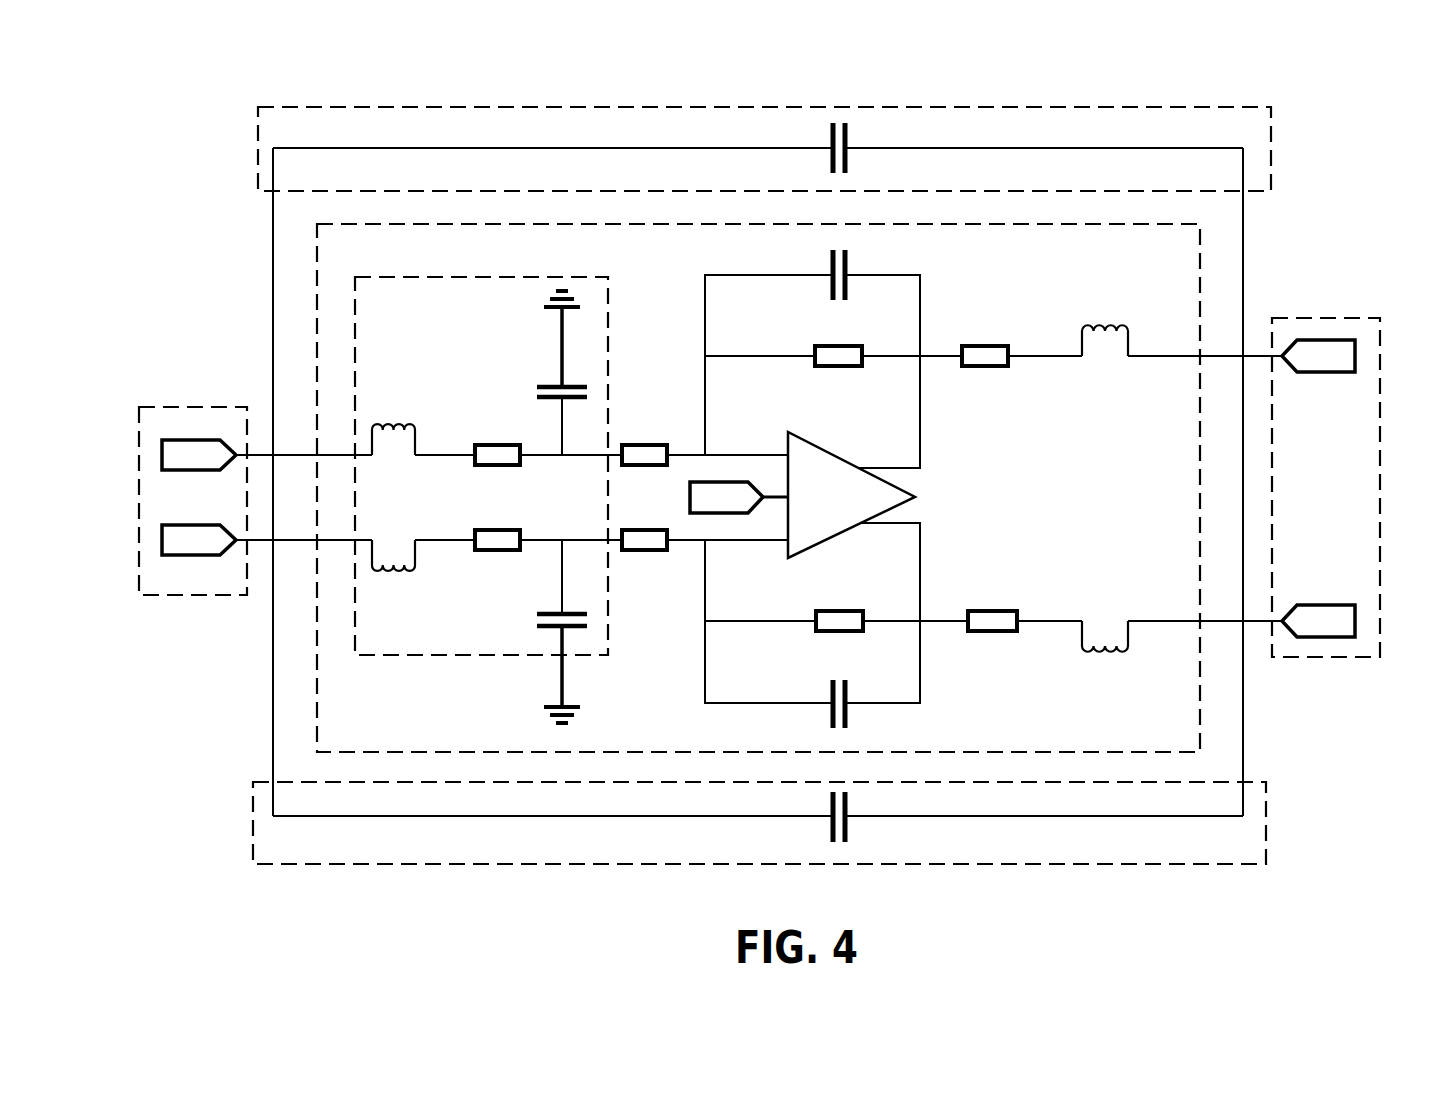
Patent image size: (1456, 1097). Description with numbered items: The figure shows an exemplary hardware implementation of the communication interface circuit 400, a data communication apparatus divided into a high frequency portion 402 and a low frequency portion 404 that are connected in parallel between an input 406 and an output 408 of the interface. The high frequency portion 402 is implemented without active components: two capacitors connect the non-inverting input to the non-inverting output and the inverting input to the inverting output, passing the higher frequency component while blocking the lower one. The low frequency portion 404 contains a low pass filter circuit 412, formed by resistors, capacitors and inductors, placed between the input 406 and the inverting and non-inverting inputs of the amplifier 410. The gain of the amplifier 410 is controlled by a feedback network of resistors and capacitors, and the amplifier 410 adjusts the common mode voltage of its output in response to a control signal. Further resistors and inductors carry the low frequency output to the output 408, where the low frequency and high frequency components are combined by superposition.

The communication interface circuit 400 is at (1386, 136).
The high frequency portion 402 is at (1271, 131).
The low frequency portion 404 is at (1201, 460).
The input 406 is at (177, 407).
The output 408 is at (1310, 318).
The amplifier 410 is at (843, 509).
The low pass filter circuit 412 is at (582, 277).